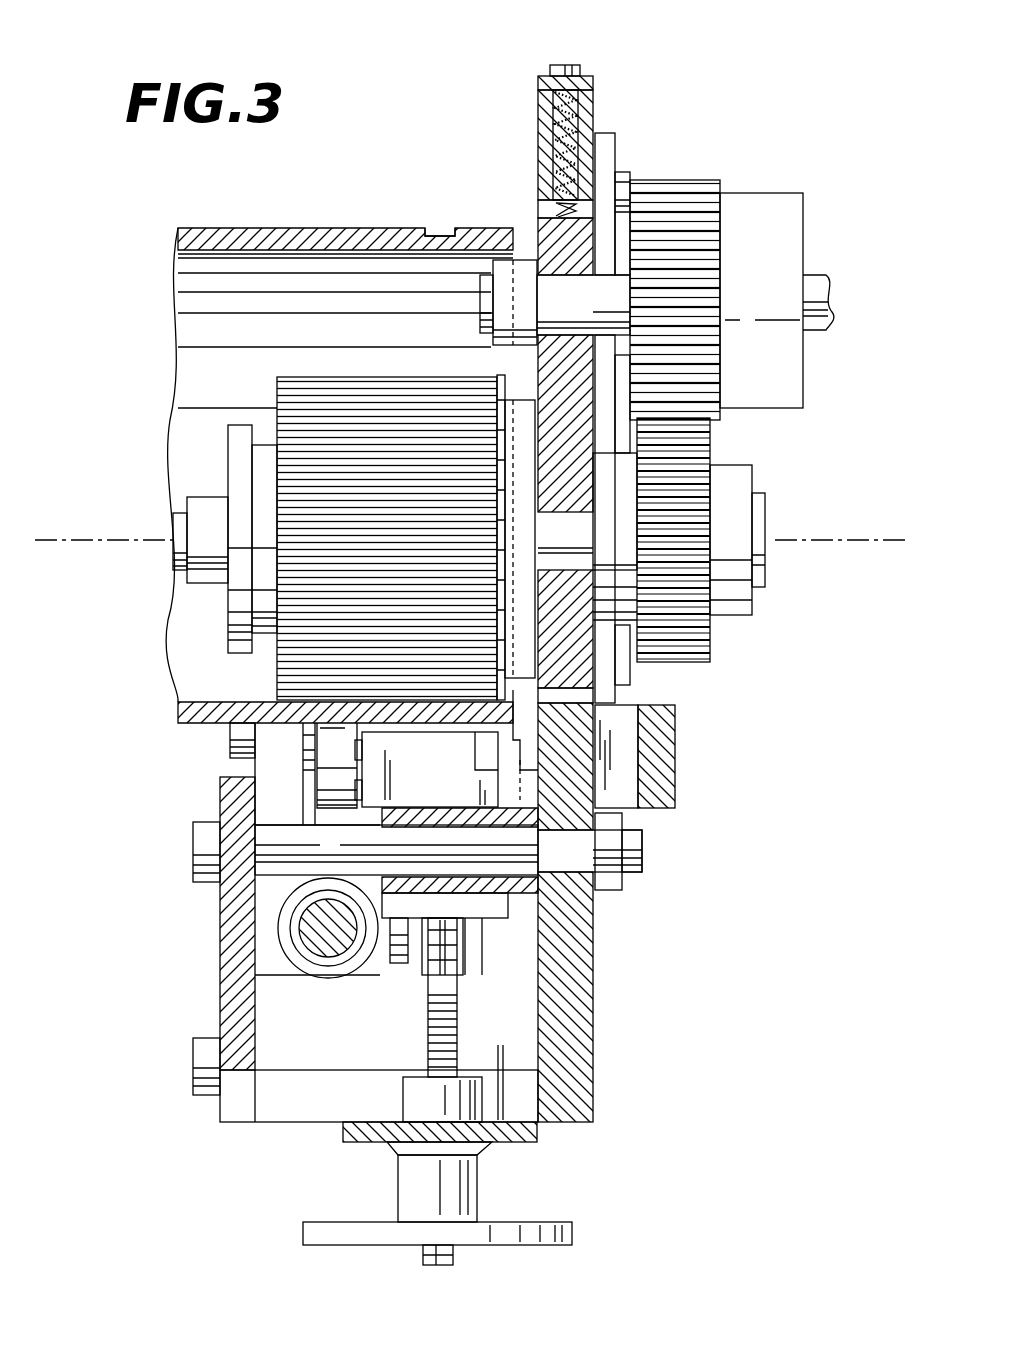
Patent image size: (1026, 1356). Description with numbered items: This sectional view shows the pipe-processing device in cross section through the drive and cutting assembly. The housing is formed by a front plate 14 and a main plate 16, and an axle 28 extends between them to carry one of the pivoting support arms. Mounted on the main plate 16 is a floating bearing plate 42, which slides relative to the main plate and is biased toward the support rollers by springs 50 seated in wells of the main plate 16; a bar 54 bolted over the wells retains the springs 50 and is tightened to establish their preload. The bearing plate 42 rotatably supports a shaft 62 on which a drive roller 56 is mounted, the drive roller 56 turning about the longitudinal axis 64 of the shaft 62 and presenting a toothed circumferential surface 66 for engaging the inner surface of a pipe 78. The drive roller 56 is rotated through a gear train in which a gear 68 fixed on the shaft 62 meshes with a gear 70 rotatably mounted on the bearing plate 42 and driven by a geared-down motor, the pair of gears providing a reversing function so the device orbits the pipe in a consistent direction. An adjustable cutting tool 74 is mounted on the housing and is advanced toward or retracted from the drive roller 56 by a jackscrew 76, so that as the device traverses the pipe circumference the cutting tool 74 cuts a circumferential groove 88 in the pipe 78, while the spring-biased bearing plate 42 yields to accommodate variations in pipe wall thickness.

The front plate 14 is at (233, 955).
The main plate 16 is at (588, 985).
The axle 28 is at (193, 1062).
The bearing plate 42 is at (545, 232).
The springs 50 is at (552, 143).
The bar 54 is at (588, 76).
The drive roller 56 is at (297, 657).
The shaft 62 is at (183, 517).
The longitudinal axis 64 is at (90, 540).
The toothed circumferential surface 66 is at (352, 393).
The gear 68 is at (703, 648).
The gear 70 is at (677, 190).
The cutting tool 74 is at (418, 781).
The jackscrew 76 is at (428, 1050).
The pipe 78 is at (276, 232).
The groove 88 is at (440, 235).